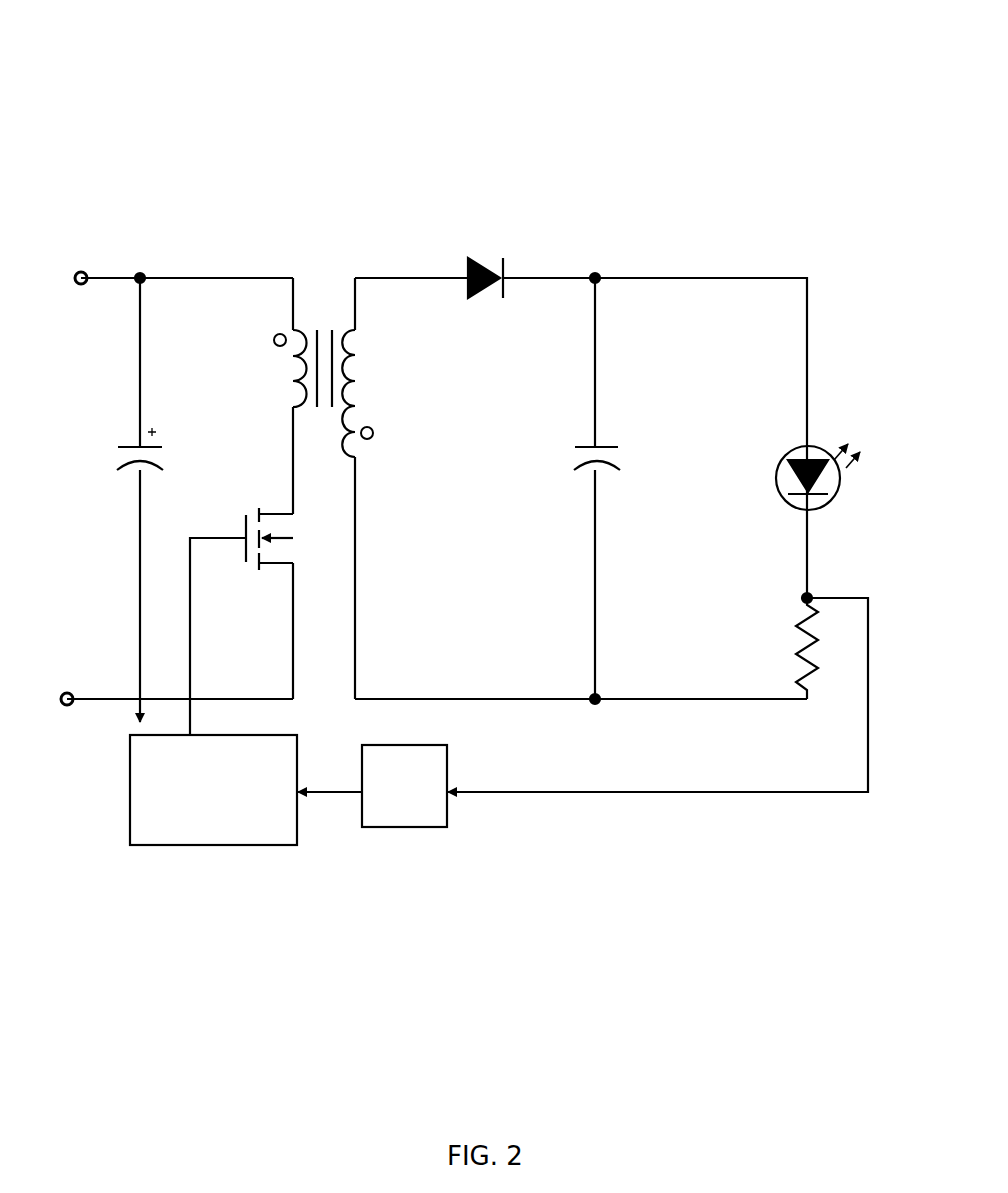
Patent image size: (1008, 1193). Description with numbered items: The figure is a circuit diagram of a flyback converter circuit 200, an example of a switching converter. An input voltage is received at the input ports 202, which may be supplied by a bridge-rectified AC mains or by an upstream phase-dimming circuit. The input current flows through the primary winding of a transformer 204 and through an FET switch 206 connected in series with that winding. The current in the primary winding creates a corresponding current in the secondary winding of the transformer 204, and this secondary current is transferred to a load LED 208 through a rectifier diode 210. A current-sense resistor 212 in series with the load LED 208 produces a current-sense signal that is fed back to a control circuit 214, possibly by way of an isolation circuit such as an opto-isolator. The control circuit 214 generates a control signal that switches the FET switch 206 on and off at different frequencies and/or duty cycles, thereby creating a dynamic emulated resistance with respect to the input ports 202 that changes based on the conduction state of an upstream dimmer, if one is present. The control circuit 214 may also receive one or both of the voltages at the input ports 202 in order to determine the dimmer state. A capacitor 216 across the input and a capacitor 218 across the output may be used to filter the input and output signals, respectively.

The flyback converter circuit 200 is at (388, 828).
The input ports 202 is at (85, 272).
The transformer 204 is at (302, 340).
The FET switch 206 is at (258, 510).
The load LED 208 is at (778, 480).
The rectifier diode 210 is at (478, 262).
The current-sense resistor 212 is at (798, 650).
The control circuit 214 is at (185, 846).
The capacitor 216 is at (126, 445).
The capacitor 218 is at (578, 447).